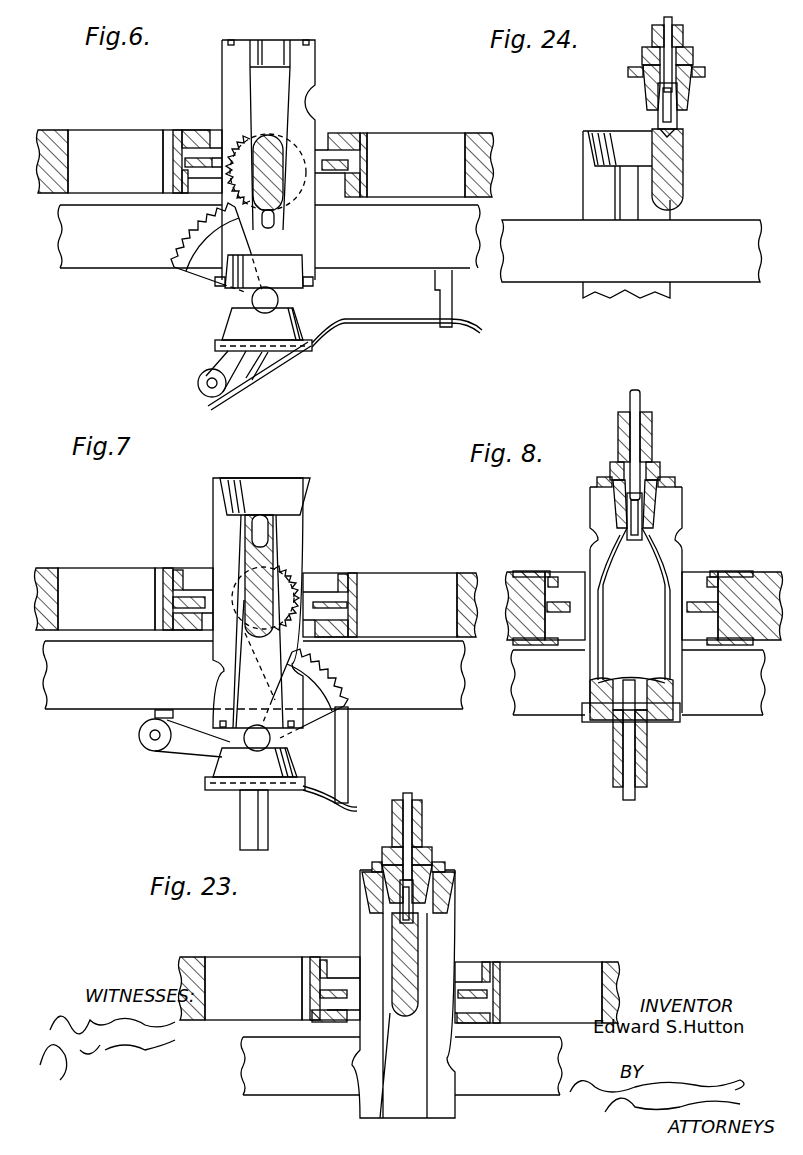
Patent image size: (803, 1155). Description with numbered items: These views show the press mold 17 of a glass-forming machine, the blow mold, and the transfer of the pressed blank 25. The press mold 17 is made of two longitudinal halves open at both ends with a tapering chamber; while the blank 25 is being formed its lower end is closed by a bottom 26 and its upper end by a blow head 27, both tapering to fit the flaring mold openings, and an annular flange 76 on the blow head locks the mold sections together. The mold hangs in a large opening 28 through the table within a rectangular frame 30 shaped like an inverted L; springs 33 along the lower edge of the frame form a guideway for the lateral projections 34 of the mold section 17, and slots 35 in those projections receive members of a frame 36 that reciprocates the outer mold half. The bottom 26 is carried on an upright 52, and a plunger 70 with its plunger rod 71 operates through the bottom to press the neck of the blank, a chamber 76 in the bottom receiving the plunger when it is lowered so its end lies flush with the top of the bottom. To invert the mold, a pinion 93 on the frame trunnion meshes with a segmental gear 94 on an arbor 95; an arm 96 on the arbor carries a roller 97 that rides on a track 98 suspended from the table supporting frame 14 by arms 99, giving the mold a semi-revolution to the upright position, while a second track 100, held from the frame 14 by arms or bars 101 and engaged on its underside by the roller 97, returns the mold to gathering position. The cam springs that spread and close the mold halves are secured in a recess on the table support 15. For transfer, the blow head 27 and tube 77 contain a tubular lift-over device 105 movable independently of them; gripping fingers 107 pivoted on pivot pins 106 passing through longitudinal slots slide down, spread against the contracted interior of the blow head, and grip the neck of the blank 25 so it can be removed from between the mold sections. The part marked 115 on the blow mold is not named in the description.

In FIG. 6, the table supporting frame 14 is at (85, 270).
In FIG. 7, the table supporting frame 14 is at (254, 675).
In FIG. 8, the table supporting frame 14 is at (738, 717).
In FIG. 23, the table supporting frame 14 is at (245, 1055).
In FIG. 6, the table support 15 is at (482, 131).
In FIG. 24, the table support 15 is at (740, 237).
In FIG. 7, the table support 15 is at (462, 575).
In FIG. 8, the table support 15 is at (631, 599).
In FIG. 23, the table support 15 is at (194, 958).
In FIG. 6, the press mold 17 is at (317, 44).
In FIG. 24, the press mold 17 is at (588, 148).
In FIG. 7, the press mold 17 is at (212, 506).
In FIG. 23, the press mold 17 is at (360, 898).
In FIG. 6, the blank 25 is at (280, 192).
In FIG. 24, the blank 25 is at (685, 170).
In FIG. 7, the blank 25 is at (275, 530).
In FIG. 23, the blank 25 is at (410, 950).
In FIG. 6, the bottom 26 is at (305, 320).
In FIG. 7, the bottom 26 is at (220, 770).
In FIG. 8, the bottom 26 is at (590, 724).
In FIG. 24, the blow head 27 is at (693, 58).
In FIG. 8, the blow head 27 is at (660, 470).
In FIG. 23, the blow head 27 is at (433, 852).
In FIG. 6, the opening 28 is at (90, 129).
In FIG. 7, the opening 28 is at (80, 567).
In FIG. 23, the opening 28 is at (240, 958).
In FIG. 6, the rectangular frame 30 is at (365, 172).
In FIG. 7, the rectangular frame 30 is at (168, 605).
In FIG. 23, the rectangular frame 30 is at (315, 1000).
In FIG. 6, the springs 33 is at (362, 186).
In FIG. 7, the springs 33 is at (175, 572).
In FIG. 23, the springs 33 is at (312, 960).
In FIG. 6, the lateral projections 34 is at (345, 133).
In FIG. 7, the lateral projections 34 is at (190, 580).
In FIG. 8, the lateral projections 34 is at (540, 572).
In FIG. 23, the lateral projections 34 is at (340, 980).
In FIG. 6, the slots 35 is at (367, 140).
In FIG. 7, the slots 35 is at (165, 595).
In FIG. 8, the slots 35 is at (558, 578).
In FIG. 23, the slots 35 is at (315, 993).
In FIG. 6, the frame 36 is at (335, 160).
In FIG. 7, the frame 36 is at (175, 635).
In FIG. 8, the frame 36 is at (560, 647).
In FIG. 23, the frame 36 is at (320, 1025).
In FIG. 7, the upright 52 is at (245, 808).
In FIG. 8, the upright 52 is at (613, 768).
In FIG. 6, the plunger 70 is at (185, 129).
In FIG. 8, the plunger 70 is at (630, 680).
In FIG. 8, the plunger rod 71 is at (636, 750).
In FIG. 24, the annular flange 76 is at (705, 76).
In FIG. 8, the annular flange 76 is at (598, 482).
In FIG. 23, the annular flange 76 is at (446, 866).
In FIG. 24, the tube 77 is at (683, 40).
In FIG. 8, the tube 77 is at (653, 435).
In FIG. 23, the tube 77 is at (423, 815).
In FIG. 6, the pinion 93 is at (252, 135).
In FIG. 7, the pinion 93 is at (283, 565).
In FIG. 6, the segmental gear 94 is at (205, 232).
In FIG. 7, the segmental gear 94 is at (340, 672).
In FIG. 7, the arbor 95 is at (268, 742).
In FIG. 6, the arm 96 is at (212, 360).
In FIG. 6, the roller 97 is at (198, 382).
In FIG. 6, the track 98 is at (222, 412).
In FIG. 6, the arms 99 is at (435, 305).
In FIG. 7, the track 100 is at (322, 805).
In FIG. 7, the arms or bars 101 is at (155, 711).
In FIG. 24, the tubular lift-over device 105 is at (672, 30).
In FIG. 8, the tubular lift-over device 105 is at (640, 400).
In FIG. 23, the tubular lift-over device 105 is at (413, 797).
In FIG. 24, the pivot pins 106 is at (676, 112).
In FIG. 8, the pivot pins 106 is at (645, 510).
In FIG. 23, the pivot pins 106 is at (413, 905).
In FIG. 24, the gripping fingers 107 is at (676, 96).
In FIG. 8, the gripping fingers 107 is at (642, 520).
In FIG. 23, the gripping fingers 107 is at (410, 918).
In FIG. 8, the casing 115 is at (686, 552).